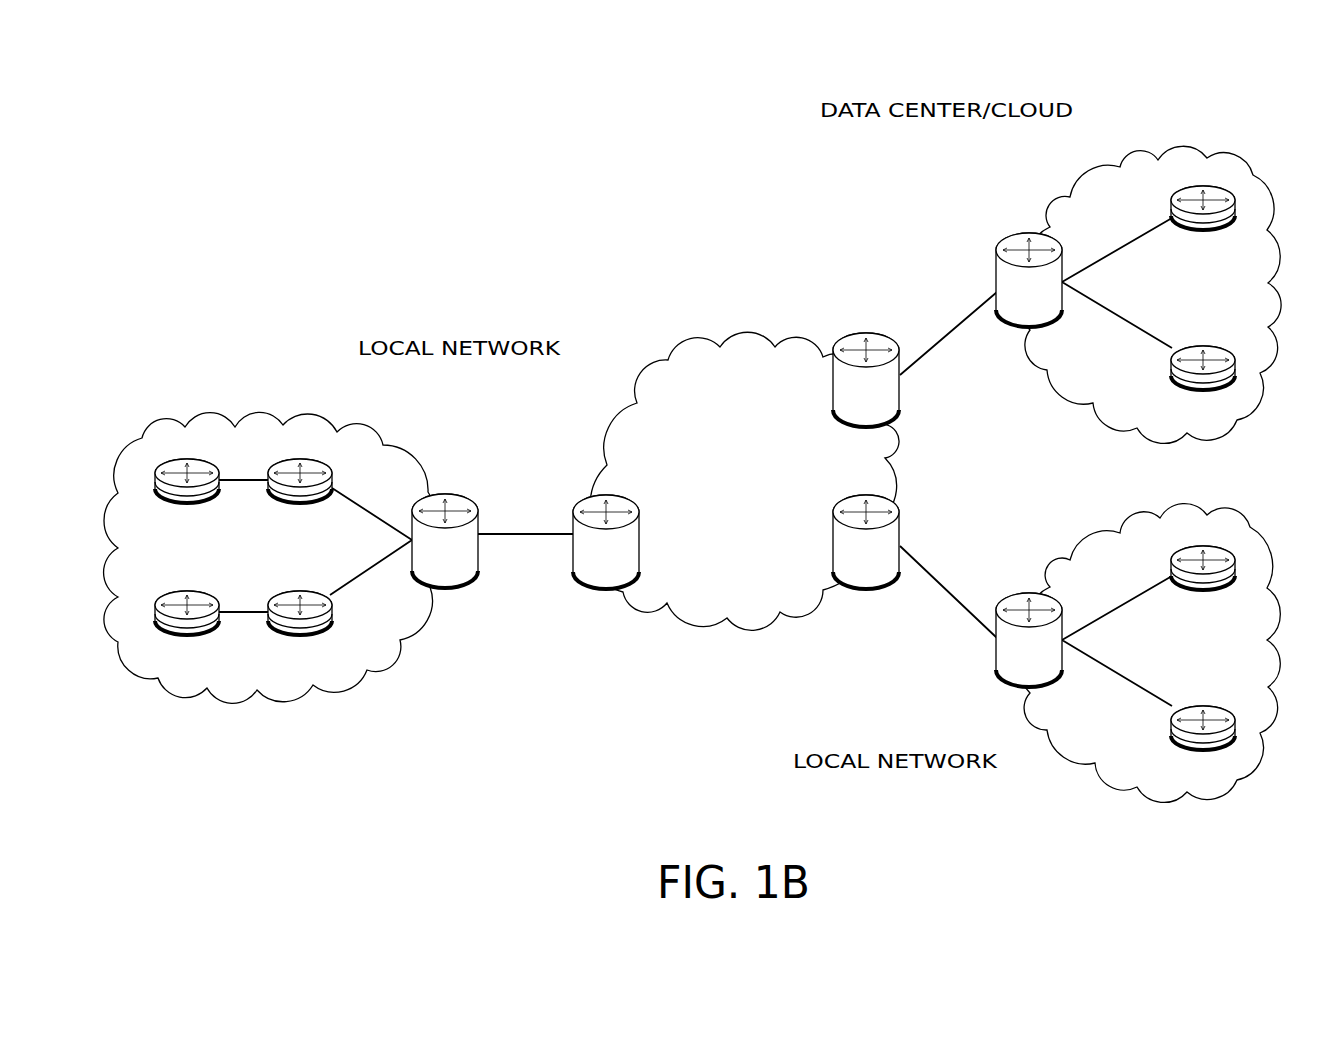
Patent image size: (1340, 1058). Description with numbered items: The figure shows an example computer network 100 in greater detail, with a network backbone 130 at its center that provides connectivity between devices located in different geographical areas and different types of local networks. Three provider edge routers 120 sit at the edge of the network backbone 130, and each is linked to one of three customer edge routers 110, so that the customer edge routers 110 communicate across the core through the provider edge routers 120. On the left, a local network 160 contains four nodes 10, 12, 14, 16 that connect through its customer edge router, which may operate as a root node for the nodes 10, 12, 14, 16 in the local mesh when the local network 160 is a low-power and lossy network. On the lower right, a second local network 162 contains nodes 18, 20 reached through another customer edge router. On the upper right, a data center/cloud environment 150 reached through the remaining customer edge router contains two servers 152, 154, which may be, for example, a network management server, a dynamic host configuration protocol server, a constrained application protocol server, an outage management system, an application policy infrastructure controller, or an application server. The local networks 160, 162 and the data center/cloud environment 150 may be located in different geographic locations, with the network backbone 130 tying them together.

The computer network 100 is at (1238, 95).
The customer edge (CE) router 110 is at (737, 460).
The provider edge (PE) router 120 is at (736, 461).
The network backbone 130 is at (744, 481).
The data center/cloud environment 150 is at (1118, 168).
The server 152 is at (1203, 221).
The server 154 is at (1203, 381).
The local network 160 is at (313, 410).
The local network 162 is at (1045, 730).
The node 10 is at (187, 495).
The node 12 is at (300, 495).
The node 14 is at (187, 626).
The node 16 is at (300, 626).
The node 18 is at (1203, 741).
The node 20 is at (1203, 581).